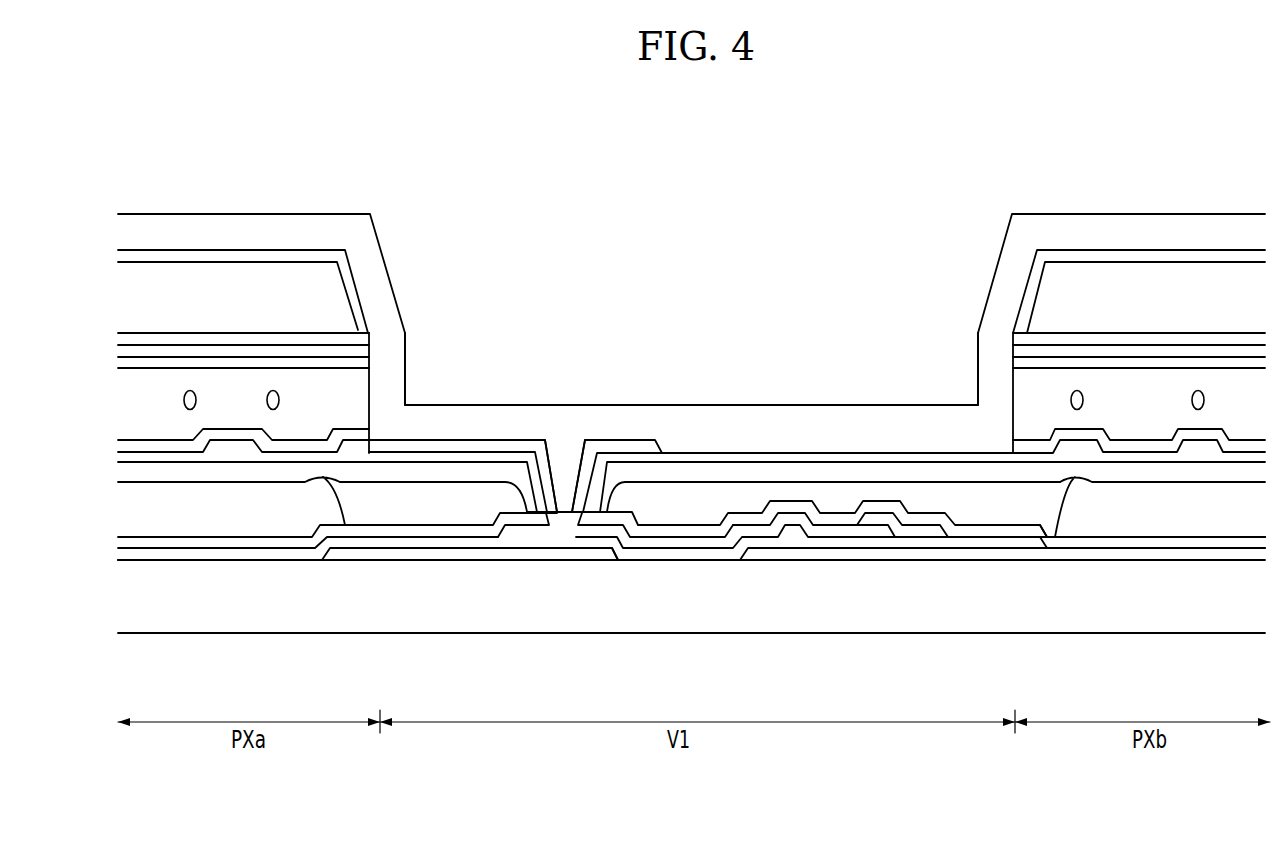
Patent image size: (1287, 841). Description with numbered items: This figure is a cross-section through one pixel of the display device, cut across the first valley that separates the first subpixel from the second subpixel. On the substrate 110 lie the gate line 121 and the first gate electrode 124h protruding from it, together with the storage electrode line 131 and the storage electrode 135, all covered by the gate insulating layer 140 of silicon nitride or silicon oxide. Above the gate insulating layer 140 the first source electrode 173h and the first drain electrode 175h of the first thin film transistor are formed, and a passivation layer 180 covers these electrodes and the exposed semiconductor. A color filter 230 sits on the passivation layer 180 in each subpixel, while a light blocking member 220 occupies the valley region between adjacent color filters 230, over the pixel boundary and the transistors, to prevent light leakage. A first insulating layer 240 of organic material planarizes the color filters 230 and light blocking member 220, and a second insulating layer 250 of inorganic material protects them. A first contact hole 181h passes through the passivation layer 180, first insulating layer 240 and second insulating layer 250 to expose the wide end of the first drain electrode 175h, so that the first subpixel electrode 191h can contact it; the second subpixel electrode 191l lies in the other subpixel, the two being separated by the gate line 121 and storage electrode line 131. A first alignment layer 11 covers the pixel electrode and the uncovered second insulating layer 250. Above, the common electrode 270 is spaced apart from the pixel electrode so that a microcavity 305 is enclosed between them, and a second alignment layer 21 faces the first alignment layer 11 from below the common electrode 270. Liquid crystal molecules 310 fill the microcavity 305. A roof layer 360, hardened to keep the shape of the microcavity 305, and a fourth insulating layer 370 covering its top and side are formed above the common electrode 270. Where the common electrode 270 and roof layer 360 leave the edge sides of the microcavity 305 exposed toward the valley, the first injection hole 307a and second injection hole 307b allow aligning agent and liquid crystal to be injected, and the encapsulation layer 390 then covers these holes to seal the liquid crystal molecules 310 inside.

The first alignment layer 11 is at (150, 445).
The second alignment layer 21 is at (1230, 363).
The substrate 110 is at (845, 610).
The gate line 121 is at (1018, 555).
The first gate electrode 124h is at (778, 553).
The storage electrode line 131 is at (360, 555).
The storage electrode 135 is at (563, 553).
The gate insulating layer 140 is at (692, 553).
The first source electrode 173h is at (912, 530).
The first drain electrode 175h is at (588, 532).
The passivation layer 180 is at (268, 542).
The first contact hole 181h is at (543, 488).
The first subpixel electrode 191h is at (473, 447).
The second subpixel electrode 191l is at (1200, 448).
The light blocking member 220 is at (413, 498).
The color filter 230 is at (205, 518).
The first insulating layer 240 is at (1117, 472).
The second insulating layer 250 is at (712, 460).
The common electrode 270 is at (1182, 350).
The microcavity 305 is at (240, 397).
The first injection hole 307a is at (1013, 400).
The second injection hole 307b is at (370, 400).
The liquid crystal molecules 310 is at (1084, 400).
The roof layer 360 is at (167, 288).
The fourth insulating layer 370 is at (292, 253).
The encapsulation layer 390 is at (1052, 232).